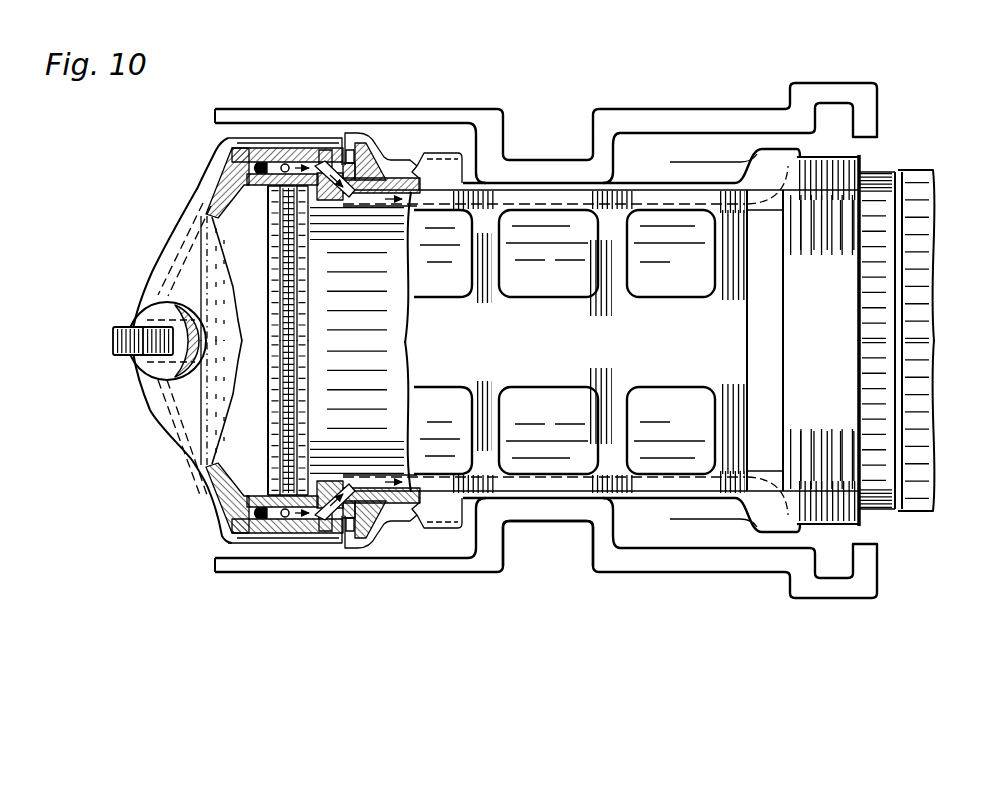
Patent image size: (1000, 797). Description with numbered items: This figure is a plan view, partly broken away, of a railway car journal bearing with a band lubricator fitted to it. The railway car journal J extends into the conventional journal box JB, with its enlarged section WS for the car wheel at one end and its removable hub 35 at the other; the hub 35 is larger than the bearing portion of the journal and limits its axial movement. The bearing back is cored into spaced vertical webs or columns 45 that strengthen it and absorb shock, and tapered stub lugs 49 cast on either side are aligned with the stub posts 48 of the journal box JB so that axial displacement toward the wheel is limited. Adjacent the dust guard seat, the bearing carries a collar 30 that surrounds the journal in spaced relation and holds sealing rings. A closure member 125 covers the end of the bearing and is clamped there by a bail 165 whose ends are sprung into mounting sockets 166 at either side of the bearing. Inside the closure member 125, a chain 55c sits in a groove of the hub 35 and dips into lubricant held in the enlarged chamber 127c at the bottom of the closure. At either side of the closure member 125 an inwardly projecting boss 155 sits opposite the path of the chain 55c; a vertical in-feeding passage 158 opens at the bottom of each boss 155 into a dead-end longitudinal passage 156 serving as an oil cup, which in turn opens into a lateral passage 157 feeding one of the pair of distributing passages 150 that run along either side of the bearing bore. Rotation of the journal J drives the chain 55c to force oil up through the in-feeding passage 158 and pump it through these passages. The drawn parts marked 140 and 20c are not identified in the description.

The bail 165 is at (222, 148).
The in-feeding passage 158 is at (288, 164).
The mounting socket 166 is at (365, 156).
The tapered stub lug 49 is at (441, 155).
The boss 155 is at (240, 181).
The longitudinal passage 156 is at (265, 183).
The lateral passage 157 is at (335, 191).
The distributing passage 150 is at (382, 201).
The enlarged chamber 127c is at (254, 273).
The closure member 125 is at (155, 243).
The railway car journal J is at (371, 325).
The chain 55c is at (288, 360).
The hub 35 is at (301, 416).
The vertical webs or columns 45 is at (566, 333).
The flange 140 is at (217, 467).
The support ring 20c is at (402, 508).
The stub post 48 is at (548, 512).
The journal box JB is at (708, 578).
The collar 30 is at (859, 157).
The enlarged section WS is at (913, 186).